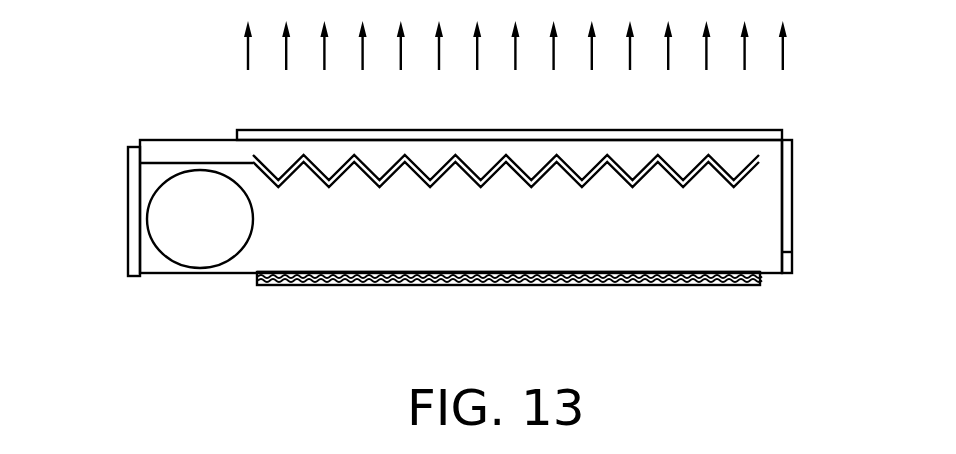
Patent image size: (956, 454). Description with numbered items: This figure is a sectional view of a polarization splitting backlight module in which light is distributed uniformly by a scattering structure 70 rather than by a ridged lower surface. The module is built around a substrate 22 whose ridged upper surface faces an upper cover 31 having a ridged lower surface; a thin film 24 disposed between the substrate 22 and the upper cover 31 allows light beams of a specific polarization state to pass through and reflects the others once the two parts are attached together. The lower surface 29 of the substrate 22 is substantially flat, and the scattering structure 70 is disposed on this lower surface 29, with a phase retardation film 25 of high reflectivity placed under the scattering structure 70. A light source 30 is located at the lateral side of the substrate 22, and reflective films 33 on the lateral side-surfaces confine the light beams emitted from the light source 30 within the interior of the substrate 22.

The substrate 22 is at (752, 212).
The thin film 24 is at (723, 170).
The phase retardation film 25 is at (492, 285).
The lower surface 29 is at (527, 285).
The light source 30 is at (195, 243).
The upper cover 31 is at (618, 145).
The reflective films 33 is at (128, 252).
The scattering structure 70 is at (588, 272).